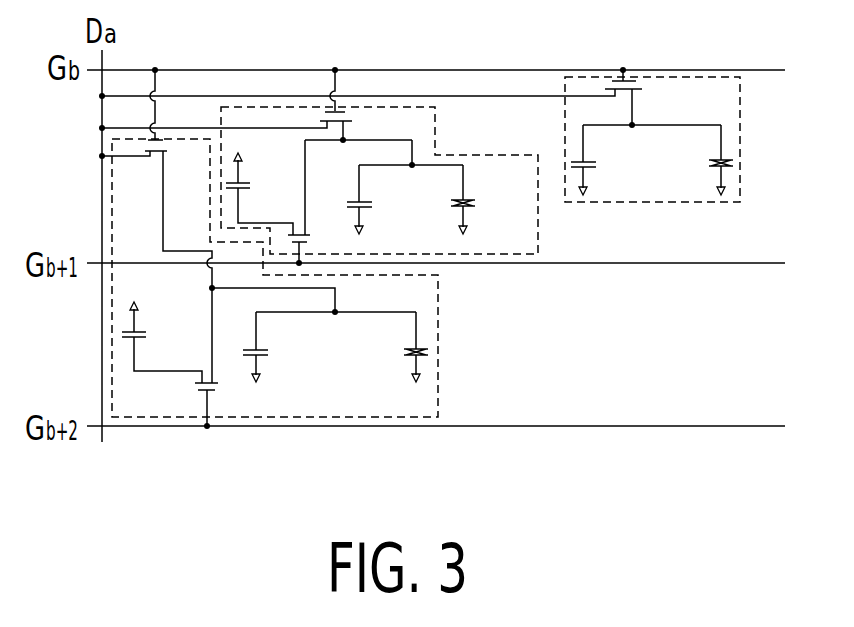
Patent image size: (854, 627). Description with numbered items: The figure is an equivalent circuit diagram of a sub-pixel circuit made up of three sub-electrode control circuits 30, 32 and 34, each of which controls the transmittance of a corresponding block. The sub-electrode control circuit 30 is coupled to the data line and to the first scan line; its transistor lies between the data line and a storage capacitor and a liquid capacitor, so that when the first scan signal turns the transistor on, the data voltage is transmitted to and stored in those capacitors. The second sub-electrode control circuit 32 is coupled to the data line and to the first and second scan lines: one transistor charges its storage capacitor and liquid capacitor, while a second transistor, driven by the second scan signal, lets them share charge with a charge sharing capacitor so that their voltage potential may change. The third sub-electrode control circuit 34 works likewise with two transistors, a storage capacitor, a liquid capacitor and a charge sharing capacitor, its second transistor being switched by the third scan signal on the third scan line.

The sub-electrode control circuit 30 is at (740, 160).
The second sub-electrode control circuit 32 is at (538, 225).
The third sub-electrode control circuit 34 is at (438, 345).